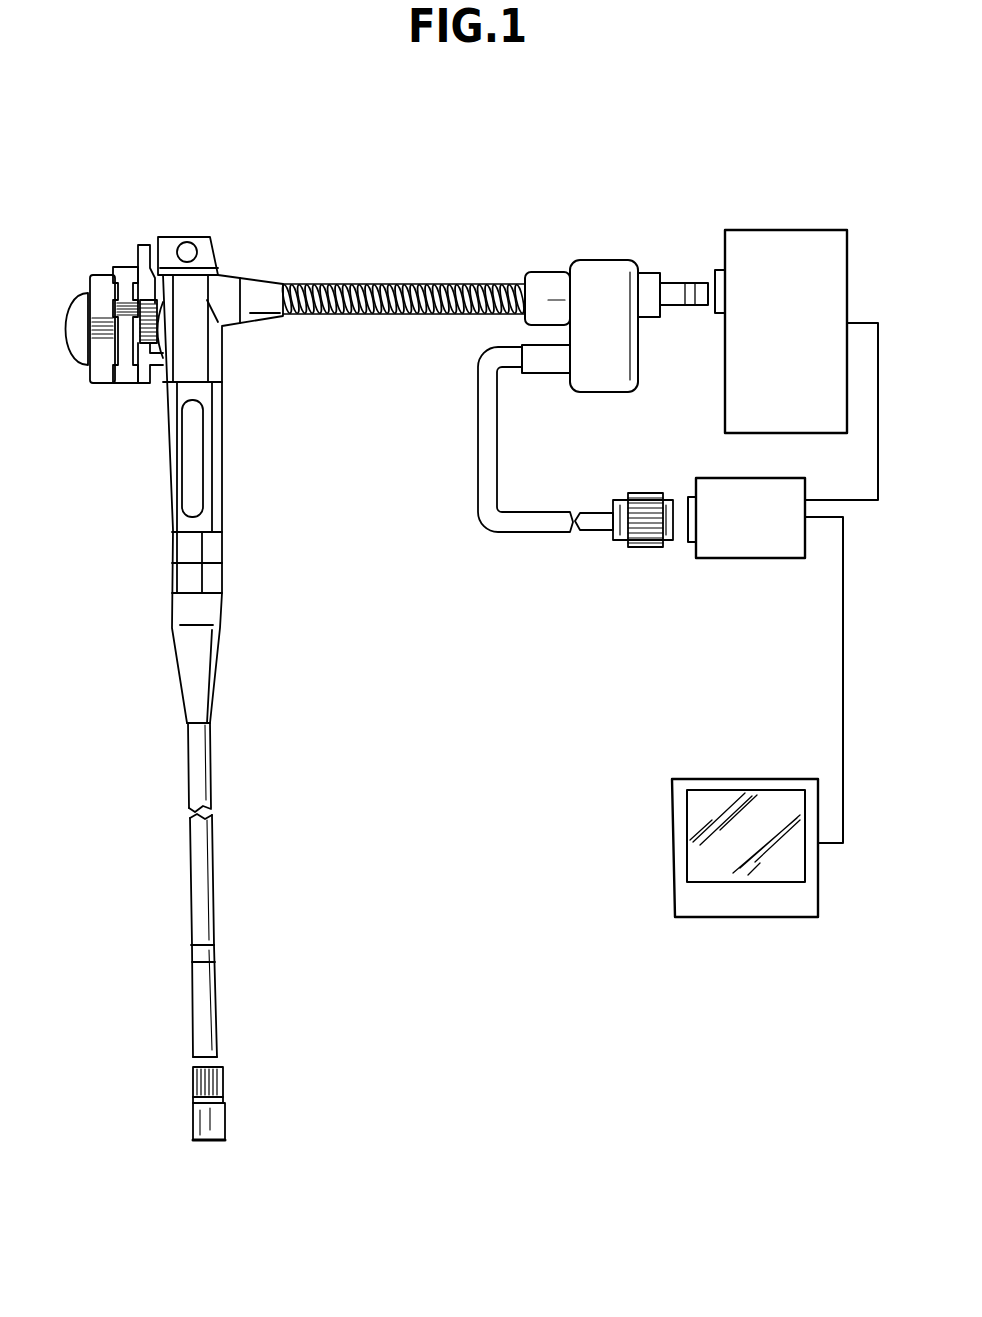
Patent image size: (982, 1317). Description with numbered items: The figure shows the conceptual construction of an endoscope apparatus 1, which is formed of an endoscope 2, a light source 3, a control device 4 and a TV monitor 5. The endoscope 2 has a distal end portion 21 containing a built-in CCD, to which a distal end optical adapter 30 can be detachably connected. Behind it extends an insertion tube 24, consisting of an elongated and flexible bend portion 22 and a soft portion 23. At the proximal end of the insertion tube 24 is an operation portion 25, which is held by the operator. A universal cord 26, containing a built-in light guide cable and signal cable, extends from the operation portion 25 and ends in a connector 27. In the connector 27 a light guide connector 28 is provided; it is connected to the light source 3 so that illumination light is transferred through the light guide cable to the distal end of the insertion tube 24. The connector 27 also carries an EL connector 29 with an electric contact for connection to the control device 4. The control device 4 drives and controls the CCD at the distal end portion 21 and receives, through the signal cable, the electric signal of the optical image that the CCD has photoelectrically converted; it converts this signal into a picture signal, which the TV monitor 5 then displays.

The endoscope apparatus 1 is at (462, 910).
The endoscope 2 is at (178, 728).
The light source 3 is at (770, 230).
The control device 4 is at (757, 560).
The TV monitor 5 is at (750, 778).
The distal end portion 21 is at (188, 1078).
The bend portion 22 is at (218, 992).
The soft portion 23 is at (213, 850).
The insertion tube 24 is at (270, 1020).
The operation portion 25 is at (222, 512).
The universal cord 26 is at (385, 285).
The connector 27 is at (597, 260).
The light guide connector 28 is at (677, 281).
The EL connector 29 is at (643, 550).
The distal end optical adapter 30 is at (227, 1123).